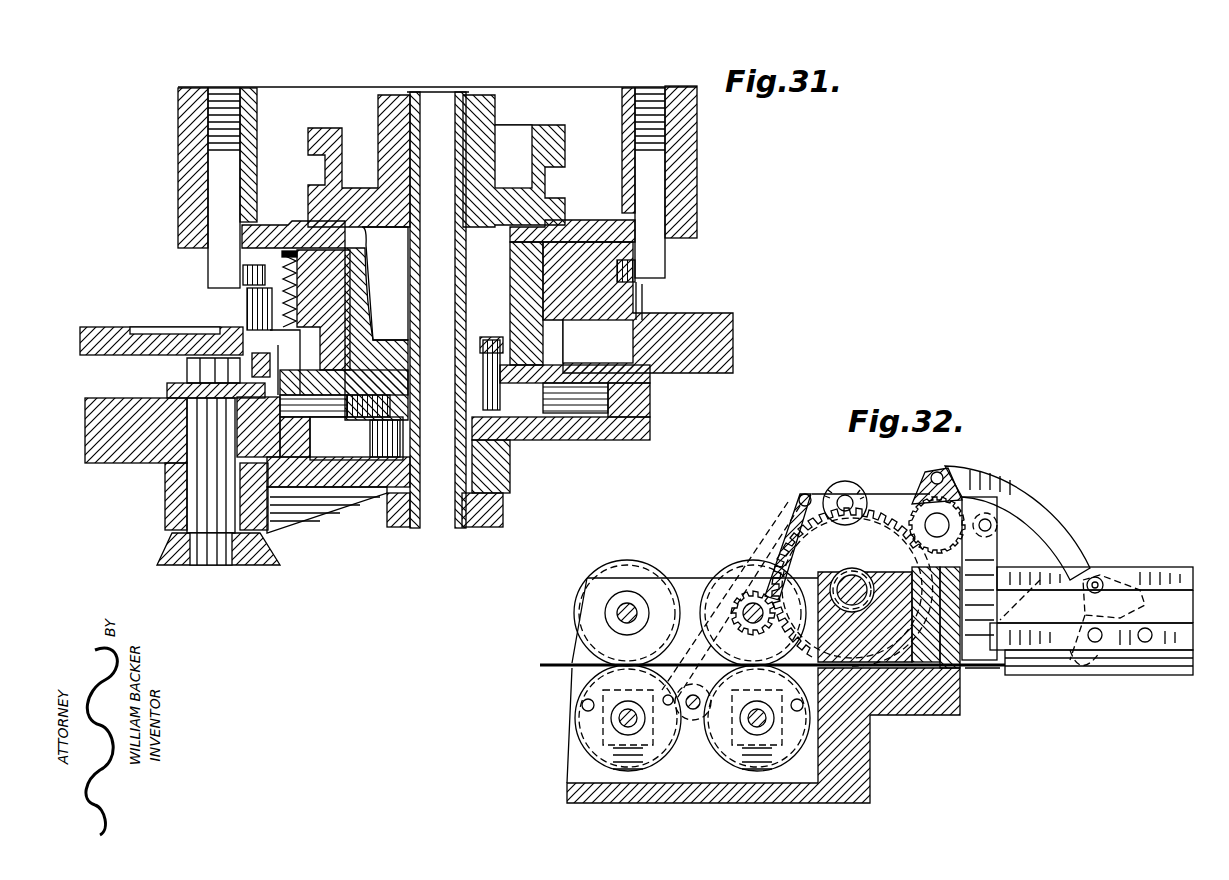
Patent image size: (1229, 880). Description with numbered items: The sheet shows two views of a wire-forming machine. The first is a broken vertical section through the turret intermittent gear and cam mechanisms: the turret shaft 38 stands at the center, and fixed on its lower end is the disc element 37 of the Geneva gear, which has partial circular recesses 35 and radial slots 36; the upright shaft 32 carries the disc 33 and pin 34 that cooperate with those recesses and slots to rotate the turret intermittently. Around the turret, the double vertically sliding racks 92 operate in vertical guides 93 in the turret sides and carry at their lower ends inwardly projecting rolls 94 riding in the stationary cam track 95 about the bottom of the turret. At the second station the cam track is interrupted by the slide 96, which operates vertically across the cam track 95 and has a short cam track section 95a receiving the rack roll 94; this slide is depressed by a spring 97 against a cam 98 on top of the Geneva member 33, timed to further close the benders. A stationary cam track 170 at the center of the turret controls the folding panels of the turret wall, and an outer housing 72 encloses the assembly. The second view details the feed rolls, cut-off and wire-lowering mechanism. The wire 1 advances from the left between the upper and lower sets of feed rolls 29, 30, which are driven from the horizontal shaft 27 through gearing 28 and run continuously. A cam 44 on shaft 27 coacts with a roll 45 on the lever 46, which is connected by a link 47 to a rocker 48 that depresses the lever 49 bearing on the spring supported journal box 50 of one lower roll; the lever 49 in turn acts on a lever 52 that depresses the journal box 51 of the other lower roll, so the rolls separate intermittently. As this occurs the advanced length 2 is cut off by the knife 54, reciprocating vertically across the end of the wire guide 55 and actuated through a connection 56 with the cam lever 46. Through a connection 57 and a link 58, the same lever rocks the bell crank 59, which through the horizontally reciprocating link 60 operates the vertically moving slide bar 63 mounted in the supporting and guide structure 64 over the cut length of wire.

In FIG. 32, the wire 1 is at (772, 658).
In FIG. 32, the predetermined lengths 2 is at (1128, 675).
In FIG. 32, the horizontal shaft 27 is at (850, 576).
In FIG. 32, the gearing 28 is at (778, 533).
In FIG. 32, the upper set of wire feeding rolls 29 is at (640, 563).
In FIG. 32, the lower set of wire feeding rolls 30 is at (702, 752).
In FIG. 31, the upright shaft 32 is at (236, 522).
In FIG. 31, the disc 33 is at (122, 452).
In FIG. 31, the pin 34 is at (357, 407).
In FIG. 31, the partial circular recesses 35 is at (571, 408).
In FIG. 31, the radial slots 36 is at (305, 422).
In FIG. 31, the disc element 37 is at (596, 394).
In FIG. 31, the turret shaft 38 is at (413, 306).
In FIG. 32, the cam 44 is at (846, 493).
In FIG. 32, the roll 45 is at (801, 500).
In FIG. 32, the lever 46 is at (920, 508).
In FIG. 32, the link 47 is at (777, 556).
In FIG. 32, the rocker 48 is at (748, 634).
In FIG. 32, the lever 49 is at (666, 707).
In FIG. 32, the spring supported journal box 50 is at (582, 740).
In FIG. 32, the spring supported journal box 51 is at (761, 718).
In FIG. 32, the lever 52 is at (694, 716).
In FIG. 32, the knife 54 is at (978, 655).
In FIG. 32, the wire guide 55 is at (968, 672).
In FIG. 32, the connection 56 is at (996, 532).
In FIG. 32, the connection 57 is at (950, 468).
In FIG. 32, the link 58 is at (1052, 522).
In FIG. 32, the bell crank 59 is at (1080, 609).
In FIG. 32, the horizontally reciprocating link 60 is at (1160, 575).
In FIG. 32, the slide bar 63 is at (1175, 609).
In FIG. 32, the supporting and guide structure 64 is at (1108, 574).
In FIG. 31, the housing 72 is at (698, 130).
In FIG. 31, the double vertically sliding racks 92 is at (436, 188).
In FIG. 31, the vertical guides 93 is at (257, 112).
In FIG. 31, the rolls 94 is at (243, 275).
In FIG. 31, the stationary cam track 95 is at (642, 298).
In FIG. 31, the short cam track section 95a is at (248, 290).
In FIG. 31, the slide 96 is at (258, 252).
In FIG. 31, the spring 97 is at (298, 270).
In FIG. 31, the cam 98 is at (252, 393).
In FIG. 31, the stationary cam track 170 is at (548, 182).